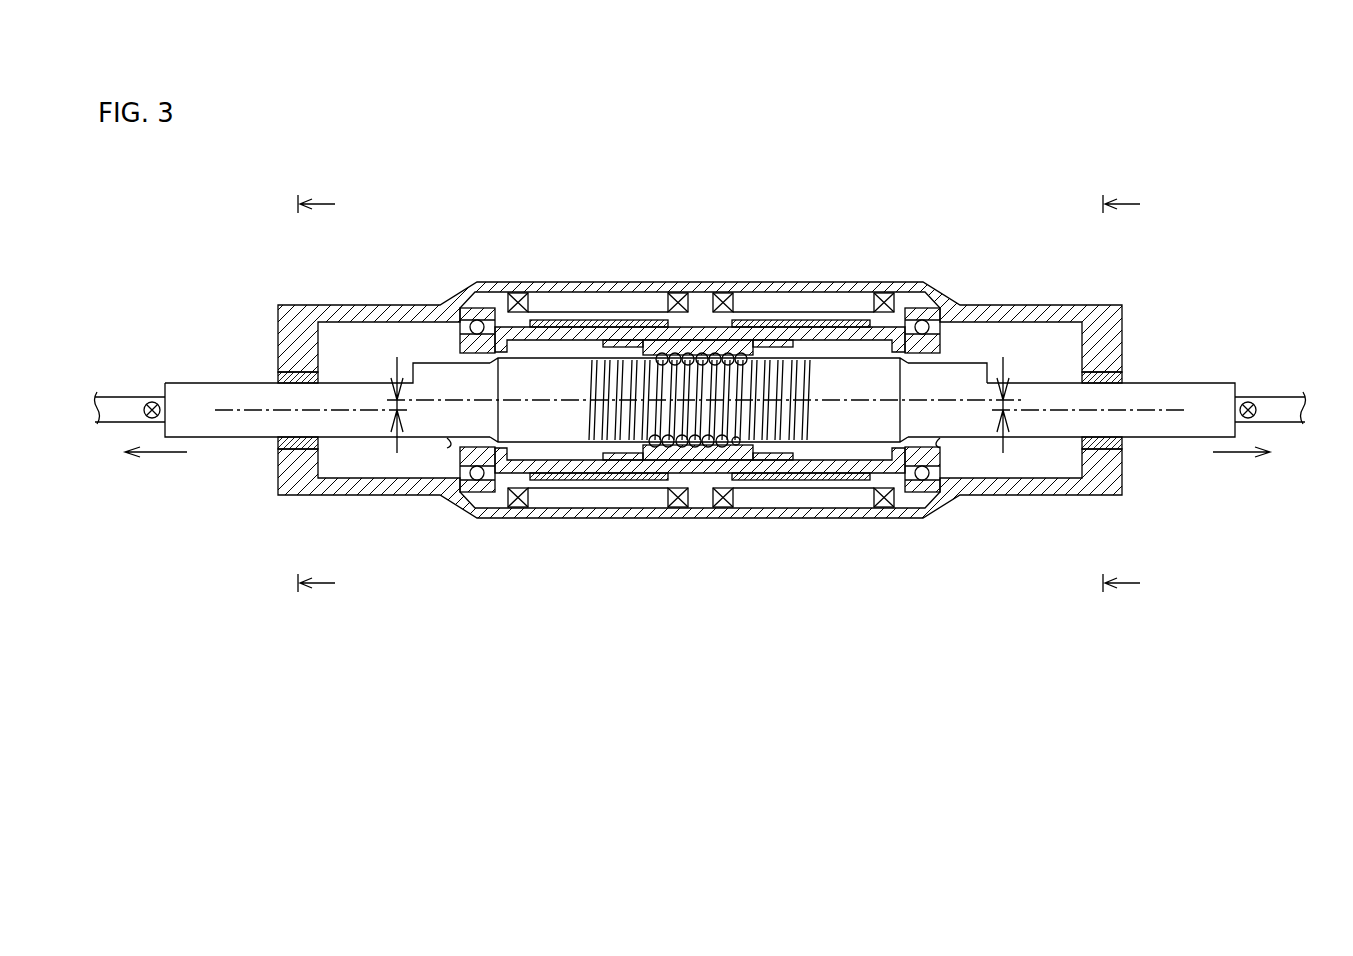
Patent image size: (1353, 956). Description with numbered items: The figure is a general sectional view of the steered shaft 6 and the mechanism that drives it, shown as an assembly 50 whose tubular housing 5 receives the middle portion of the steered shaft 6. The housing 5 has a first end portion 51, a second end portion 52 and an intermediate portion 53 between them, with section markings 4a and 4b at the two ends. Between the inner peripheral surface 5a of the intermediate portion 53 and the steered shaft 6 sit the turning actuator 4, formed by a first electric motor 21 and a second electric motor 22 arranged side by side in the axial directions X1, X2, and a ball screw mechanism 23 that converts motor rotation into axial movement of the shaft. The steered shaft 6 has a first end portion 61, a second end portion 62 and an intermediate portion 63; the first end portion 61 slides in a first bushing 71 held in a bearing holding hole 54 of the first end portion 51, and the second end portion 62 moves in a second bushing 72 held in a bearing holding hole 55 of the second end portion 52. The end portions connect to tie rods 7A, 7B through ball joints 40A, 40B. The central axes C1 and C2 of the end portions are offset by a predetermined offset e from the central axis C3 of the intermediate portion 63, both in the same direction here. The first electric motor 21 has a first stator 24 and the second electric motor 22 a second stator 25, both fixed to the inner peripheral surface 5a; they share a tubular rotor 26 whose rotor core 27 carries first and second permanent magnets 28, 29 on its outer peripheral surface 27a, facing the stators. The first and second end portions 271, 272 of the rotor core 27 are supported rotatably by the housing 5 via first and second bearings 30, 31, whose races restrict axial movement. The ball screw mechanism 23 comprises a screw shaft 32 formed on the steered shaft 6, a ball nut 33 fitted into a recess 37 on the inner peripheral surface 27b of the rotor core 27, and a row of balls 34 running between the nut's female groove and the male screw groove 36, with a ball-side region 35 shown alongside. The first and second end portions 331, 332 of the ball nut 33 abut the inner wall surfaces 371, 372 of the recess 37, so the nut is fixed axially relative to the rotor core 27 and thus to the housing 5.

The turning actuator 4 is at (562, 280).
The first housing portion 4a is at (337, 394).
The second housing portion 4b is at (1143, 394).
The housing 5 is at (780, 280).
The inner peripheral surface 5a is at (704, 320).
The steered shaft 6 is at (963, 360).
The tie rod 7A is at (113, 415).
The tie rod 7B is at (1290, 422).
The first electric motor 21 is at (538, 280).
The second electric motor 22 is at (866, 288).
The ball screw mechanism 23 is at (700, 318).
The first stator 24 is at (592, 300).
The second stator 25 is at (835, 318).
The rotor 26 is at (503, 322).
The rotor core 27 is at (580, 474).
The outer peripheral surface 27a is at (505, 484).
The inner peripheral surface 27b is at (543, 462).
The first permanent magnet 28 is at (625, 482).
The second permanent magnet 29 is at (815, 484).
The first bearing 30 is at (477, 478).
The second bearing 31 is at (922, 480).
The screw shaft 32 is at (828, 452).
The ball nut 33 is at (702, 472).
The balls 34 is at (738, 462).
The balls 35 is at (748, 362).
The screw groove 36 is at (812, 407).
The recess 37 is at (663, 344).
The ball joint 40A is at (150, 402).
The ball joint 40B is at (1250, 402).
The actuator 50 is at (906, 262).
The first end portion 51 is at (298, 312).
The second end portion 52 is at (1098, 314).
The intermediate portion 53 is at (808, 286).
The bearing holding hole 54 is at (273, 387).
The bearing holding hole 55 is at (1122, 385).
The first end portion 61 is at (195, 383).
The second end portion 62 is at (1197, 383).
The intermediate portion 63 is at (878, 337).
The first bushing 71 is at (292, 458).
The second bushing 72 is at (1093, 470).
The first end portion 271 is at (447, 448).
The second end portion 272 is at (940, 448).
The first end portion 331 is at (648, 338).
The second end portion 332 is at (748, 340).
The inner wall surface 371 is at (650, 462).
The inner wall surface 372 is at (762, 462).
The central axis C1 is at (232, 415).
The central axis C2 is at (1163, 415).
The central axis C3 is at (452, 397).
The offset e is at (394, 392).
The first axial direction X1 is at (158, 456).
The second axial direction X2 is at (1230, 456).